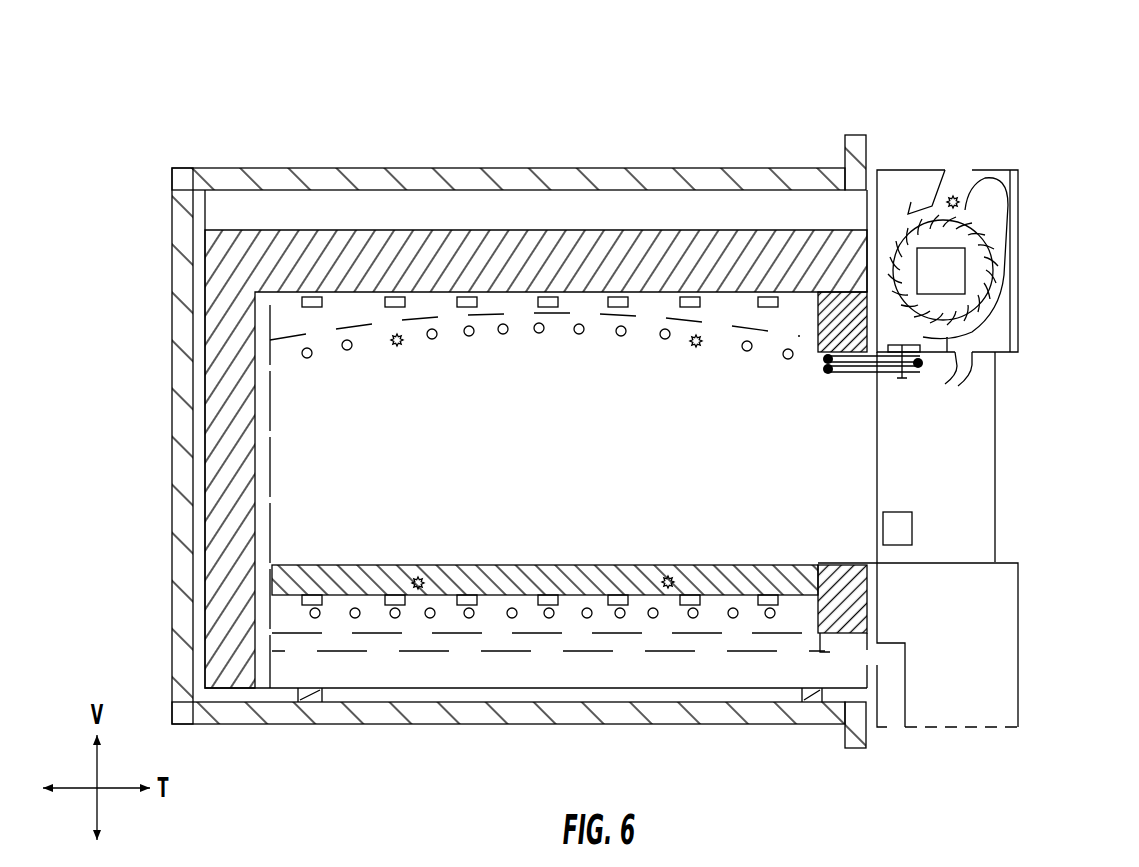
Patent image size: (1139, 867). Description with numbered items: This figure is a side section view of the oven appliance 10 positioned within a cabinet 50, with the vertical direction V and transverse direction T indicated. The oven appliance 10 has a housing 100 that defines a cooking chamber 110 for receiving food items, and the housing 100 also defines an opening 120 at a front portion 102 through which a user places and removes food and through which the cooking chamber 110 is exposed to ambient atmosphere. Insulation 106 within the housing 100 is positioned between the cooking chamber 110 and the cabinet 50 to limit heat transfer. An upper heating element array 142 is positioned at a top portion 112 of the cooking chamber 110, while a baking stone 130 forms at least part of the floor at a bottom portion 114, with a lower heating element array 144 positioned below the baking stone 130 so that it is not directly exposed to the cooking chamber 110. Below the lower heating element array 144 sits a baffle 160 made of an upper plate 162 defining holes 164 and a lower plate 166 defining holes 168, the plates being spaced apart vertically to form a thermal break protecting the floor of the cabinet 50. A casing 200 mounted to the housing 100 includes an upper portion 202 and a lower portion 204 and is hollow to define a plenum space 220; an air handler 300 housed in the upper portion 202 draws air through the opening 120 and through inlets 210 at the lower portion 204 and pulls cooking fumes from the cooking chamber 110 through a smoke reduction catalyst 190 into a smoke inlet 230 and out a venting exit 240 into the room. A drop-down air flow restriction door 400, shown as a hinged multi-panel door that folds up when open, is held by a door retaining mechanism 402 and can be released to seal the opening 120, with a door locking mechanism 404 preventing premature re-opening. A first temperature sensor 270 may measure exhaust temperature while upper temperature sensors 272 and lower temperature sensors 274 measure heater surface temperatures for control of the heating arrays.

The oven appliance 10 is at (611, 422).
The cabinet 50 is at (200, 168).
The housing 100 is at (207, 437).
The front portion 102 is at (840, 480).
The insulation 106 is at (385, 245).
The cooking chamber 110 is at (524, 458).
The top portion 112 is at (374, 391).
The bottom portion 114 is at (620, 524).
The opening 120 is at (912, 476).
The baking stone 130 is at (347, 570).
The upper heating element array 142 is at (540, 334).
The lower heating element array 144 is at (430, 620).
The baffle 160 is at (522, 640).
The upper plate 162 is at (453, 635).
The holes 164 is at (750, 640).
The lower plate 166 is at (760, 652).
The holes 168 is at (797, 652).
The smoke reduction catalyst 190 is at (818, 322).
The casing 200 is at (1022, 290).
The upper portion 202 is at (917, 168).
The lower portion 204 is at (1020, 715).
The inlets 210 is at (995, 728).
The plenum space 220 is at (962, 672).
The smoke inlet 230 is at (875, 315).
The venting exit 240 is at (961, 170).
The first temperature sensor 270 is at (960, 202).
The upper temperature sensors 272 is at (403, 343).
The lower temperature sensors 274 is at (416, 578).
The air handler 300 is at (903, 247).
The drop-down air flow restriction door 400 is at (843, 375).
The door retaining mechanism 402 is at (902, 378).
The door locking mechanism 404 is at (905, 530).